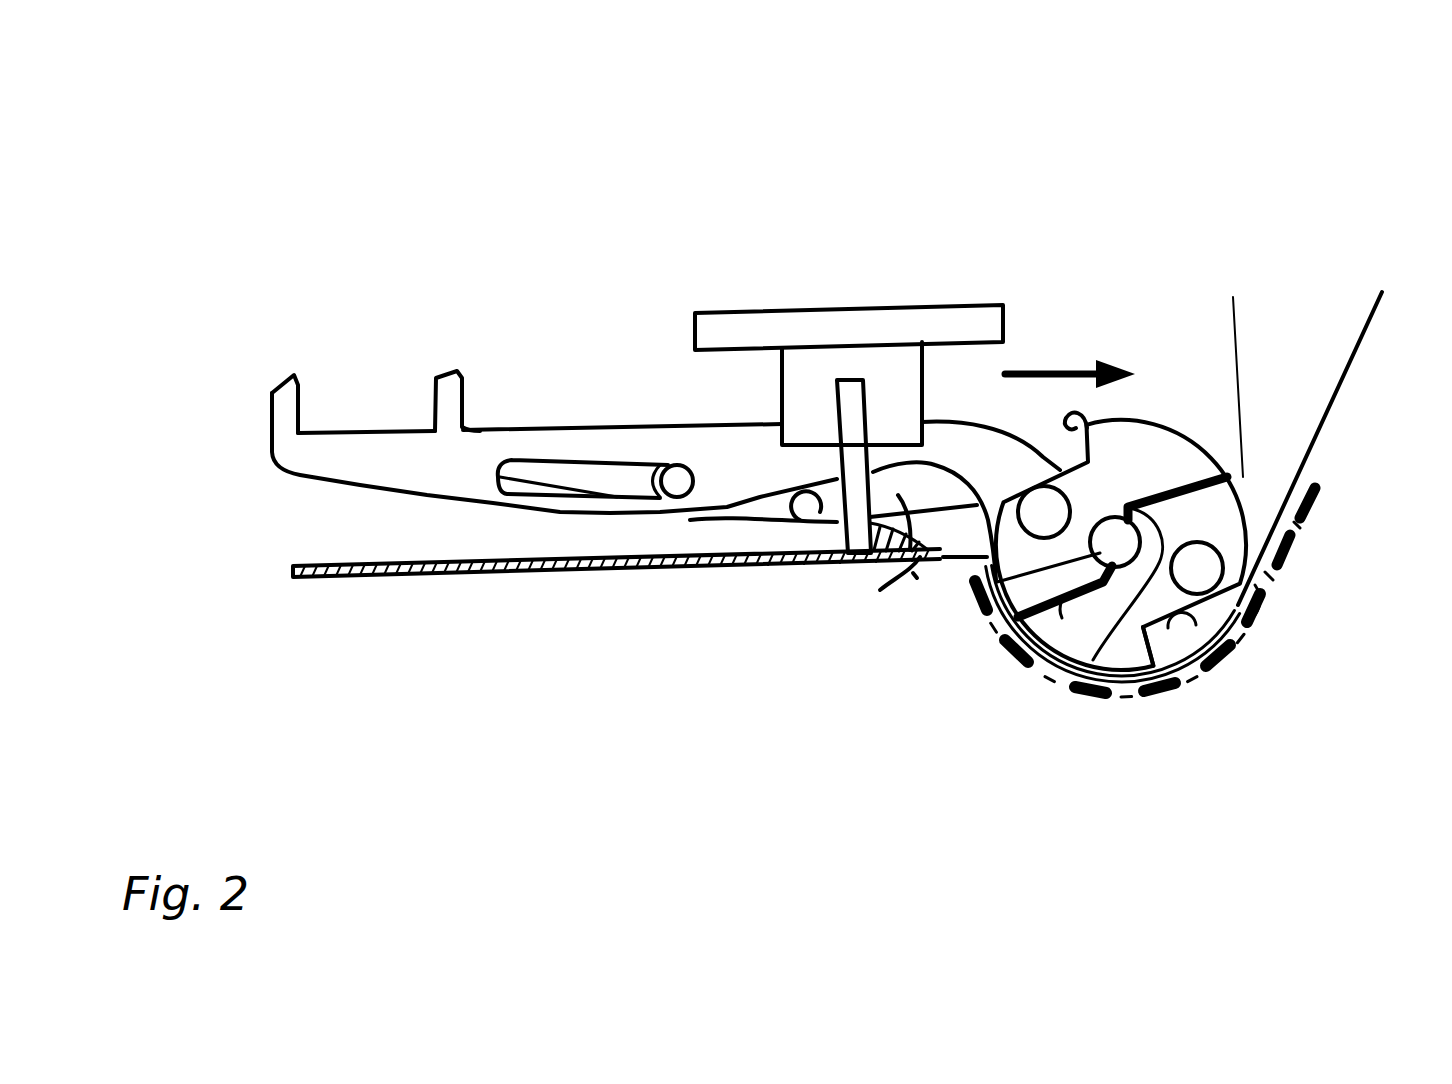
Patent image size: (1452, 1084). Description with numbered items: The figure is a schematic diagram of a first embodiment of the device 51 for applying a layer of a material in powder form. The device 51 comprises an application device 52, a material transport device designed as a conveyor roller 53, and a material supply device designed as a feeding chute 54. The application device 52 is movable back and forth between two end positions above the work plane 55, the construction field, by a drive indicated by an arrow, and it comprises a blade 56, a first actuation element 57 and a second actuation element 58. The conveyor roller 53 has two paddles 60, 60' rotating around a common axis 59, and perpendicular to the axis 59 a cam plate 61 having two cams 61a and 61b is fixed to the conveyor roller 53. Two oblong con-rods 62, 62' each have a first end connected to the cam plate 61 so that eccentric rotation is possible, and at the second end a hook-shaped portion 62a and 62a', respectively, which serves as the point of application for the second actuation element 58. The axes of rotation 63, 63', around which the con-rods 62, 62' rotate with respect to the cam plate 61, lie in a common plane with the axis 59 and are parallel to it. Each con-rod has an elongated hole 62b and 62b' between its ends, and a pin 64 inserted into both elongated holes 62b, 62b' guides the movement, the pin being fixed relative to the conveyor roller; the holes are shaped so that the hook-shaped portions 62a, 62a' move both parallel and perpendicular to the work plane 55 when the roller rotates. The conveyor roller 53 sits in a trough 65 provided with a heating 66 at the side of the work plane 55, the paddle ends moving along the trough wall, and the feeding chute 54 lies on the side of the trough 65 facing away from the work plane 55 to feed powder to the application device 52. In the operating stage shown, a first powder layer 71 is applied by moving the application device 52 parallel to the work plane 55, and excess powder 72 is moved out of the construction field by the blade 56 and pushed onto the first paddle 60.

The device for applying a layer of a material in powder form 51 is at (452, 243).
The application device 52 is at (1003, 100).
The conveyor roller 53 is at (900, 608).
The feeding chute 54 is at (1285, 408).
The work plane 55 is at (447, 570).
The blade 56 is at (852, 413).
The first actuation element 57 is at (805, 360).
The second actuation element 58 is at (755, 330).
The common axis 59 is at (1000, 605).
The paddle 60 is at (1004, 642).
The paddle 60' is at (1082, 676).
The cam plate 61 is at (1118, 650).
The cam 61a is at (1190, 660).
The cam 61b is at (1075, 410).
The con-rod 62 is at (618, 475).
The con-rod 62' is at (774, 584).
The hook-shaped portion 62a is at (237, 365).
The hook-shaped portion 62a' is at (418, 362).
The elongated hole 62b is at (583, 558).
The elongated hole 62b' is at (724, 572).
The axis of rotation 63 is at (1279, 576).
The axis of rotation 63' is at (1101, 491).
The pin 64 is at (675, 478).
The trough 65 is at (1232, 636).
The heating 66 is at (1220, 655).
The first powder layer 71 is at (372, 573).
The excess powder 72 is at (885, 560).